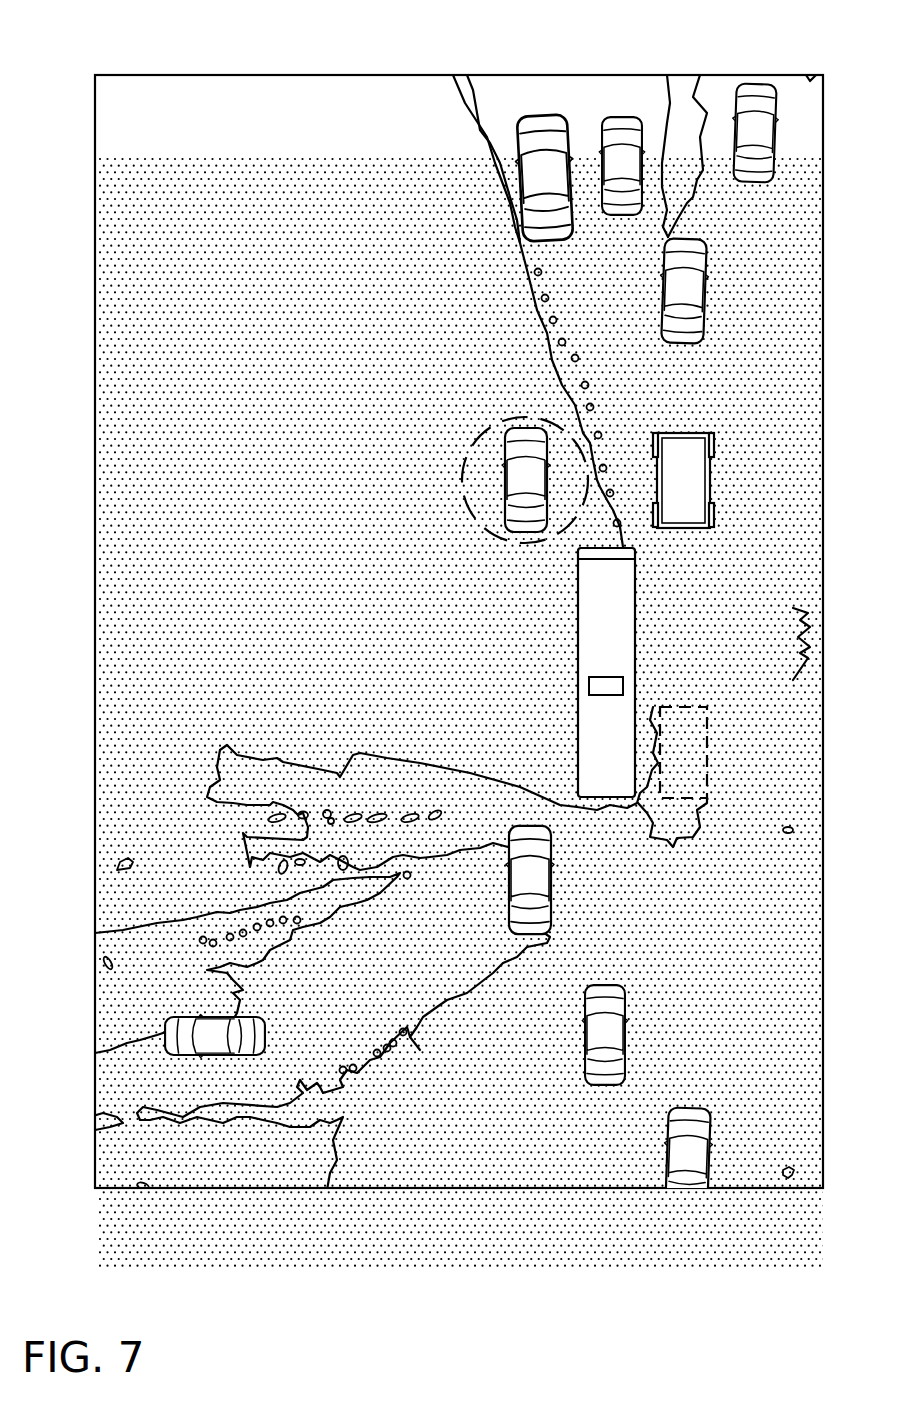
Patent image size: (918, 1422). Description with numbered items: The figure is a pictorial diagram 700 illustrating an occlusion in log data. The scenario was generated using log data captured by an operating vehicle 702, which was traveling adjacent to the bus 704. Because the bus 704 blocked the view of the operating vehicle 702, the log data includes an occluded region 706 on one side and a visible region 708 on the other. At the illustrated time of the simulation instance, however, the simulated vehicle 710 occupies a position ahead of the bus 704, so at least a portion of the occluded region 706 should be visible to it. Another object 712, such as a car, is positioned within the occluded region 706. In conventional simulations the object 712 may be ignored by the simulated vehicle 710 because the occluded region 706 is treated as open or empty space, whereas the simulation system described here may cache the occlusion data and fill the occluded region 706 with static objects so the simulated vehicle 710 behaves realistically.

The pictorial diagram 700 is at (122, 22).
The operating vehicle 702 is at (693, 707).
The bus 704 is at (625, 657).
The occluded region 706 is at (300, 397).
The visible region 708 is at (788, 388).
The simulated vehicle 710 is at (685, 528).
The object 712 is at (487, 420).